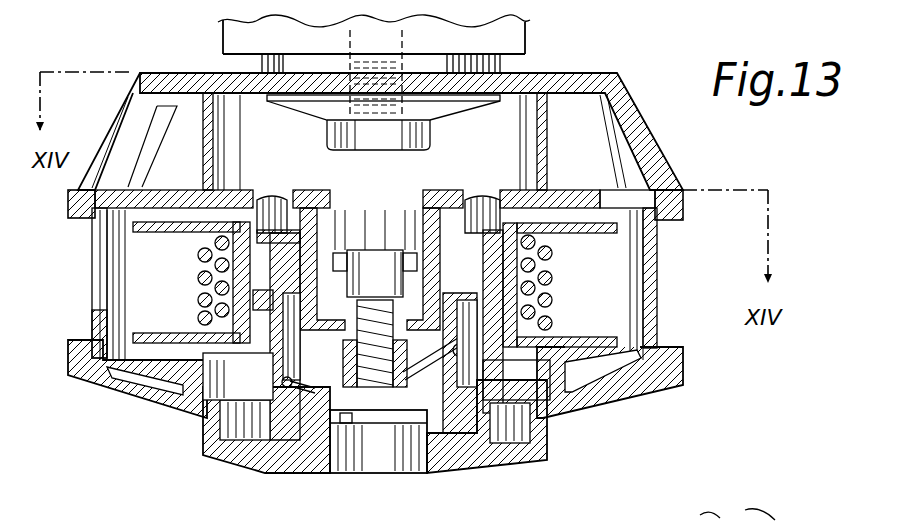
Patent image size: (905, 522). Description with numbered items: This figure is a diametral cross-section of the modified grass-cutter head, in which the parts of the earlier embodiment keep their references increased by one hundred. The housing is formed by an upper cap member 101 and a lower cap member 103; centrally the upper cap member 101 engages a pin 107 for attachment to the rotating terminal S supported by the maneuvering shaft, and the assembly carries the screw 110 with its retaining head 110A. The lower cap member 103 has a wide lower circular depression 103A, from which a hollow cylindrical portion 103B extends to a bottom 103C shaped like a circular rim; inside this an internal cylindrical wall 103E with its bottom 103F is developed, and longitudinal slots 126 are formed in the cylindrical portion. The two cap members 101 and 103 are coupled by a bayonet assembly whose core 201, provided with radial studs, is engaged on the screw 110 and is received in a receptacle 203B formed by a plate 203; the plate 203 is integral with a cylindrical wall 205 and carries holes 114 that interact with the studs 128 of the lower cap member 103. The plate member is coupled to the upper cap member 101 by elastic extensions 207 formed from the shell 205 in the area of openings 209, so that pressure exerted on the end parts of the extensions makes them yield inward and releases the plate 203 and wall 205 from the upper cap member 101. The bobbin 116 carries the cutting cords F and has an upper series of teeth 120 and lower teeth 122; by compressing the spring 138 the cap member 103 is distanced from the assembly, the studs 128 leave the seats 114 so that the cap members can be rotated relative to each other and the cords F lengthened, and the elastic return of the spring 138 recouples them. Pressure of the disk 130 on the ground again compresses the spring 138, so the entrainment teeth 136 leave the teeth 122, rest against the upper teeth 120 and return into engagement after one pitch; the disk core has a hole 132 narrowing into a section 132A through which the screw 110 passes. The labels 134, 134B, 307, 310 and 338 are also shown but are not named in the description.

The rotating terminal S is at (530, 28).
The upper cap member 101 is at (190, 68).
The elastic extensions 207 is at (113, 128).
The pin 107 is at (110, 104).
The bottom of cylindrical portion 103C is at (158, 146).
The plate 203 is at (568, 200).
The openings 209 is at (623, 187).
The core 201 is at (381, 240).
The bobbin 116 is at (603, 238).
The studs 128 is at (269, 198).
The holes 114 is at (492, 190).
The upper series of teeth 120 is at (200, 256).
The entrainment teeth 136 is at (200, 300).
The teeth of lower rim 122 is at (200, 318).
The hollow cylindrical portion 103B is at (548, 258).
The cords F is at (550, 282).
The internal cylindrical wall 103E is at (553, 307).
The cylindrical wall 205 is at (98, 323).
The lower cap member 103 is at (135, 404).
The longitudinal slots 126 is at (188, 400).
The lower circular depression 103A is at (617, 393).
The receptacle 203B is at (350, 182).
The spring 138 is at (378, 335).
The bottom of internal wall 103F is at (457, 357).
The disk 130 is at (220, 460).
The window 134 is at (230, 418).
The narrowed hole section 132A is at (262, 470).
The hole 132 is at (332, 472).
The screw 110 is at (360, 403).
The retaining head 110A is at (400, 433).
The base window 134B is at (507, 462).
The element 310 is at (544, 512).
The element 307 is at (628, 515).
The element 338 is at (712, 521).